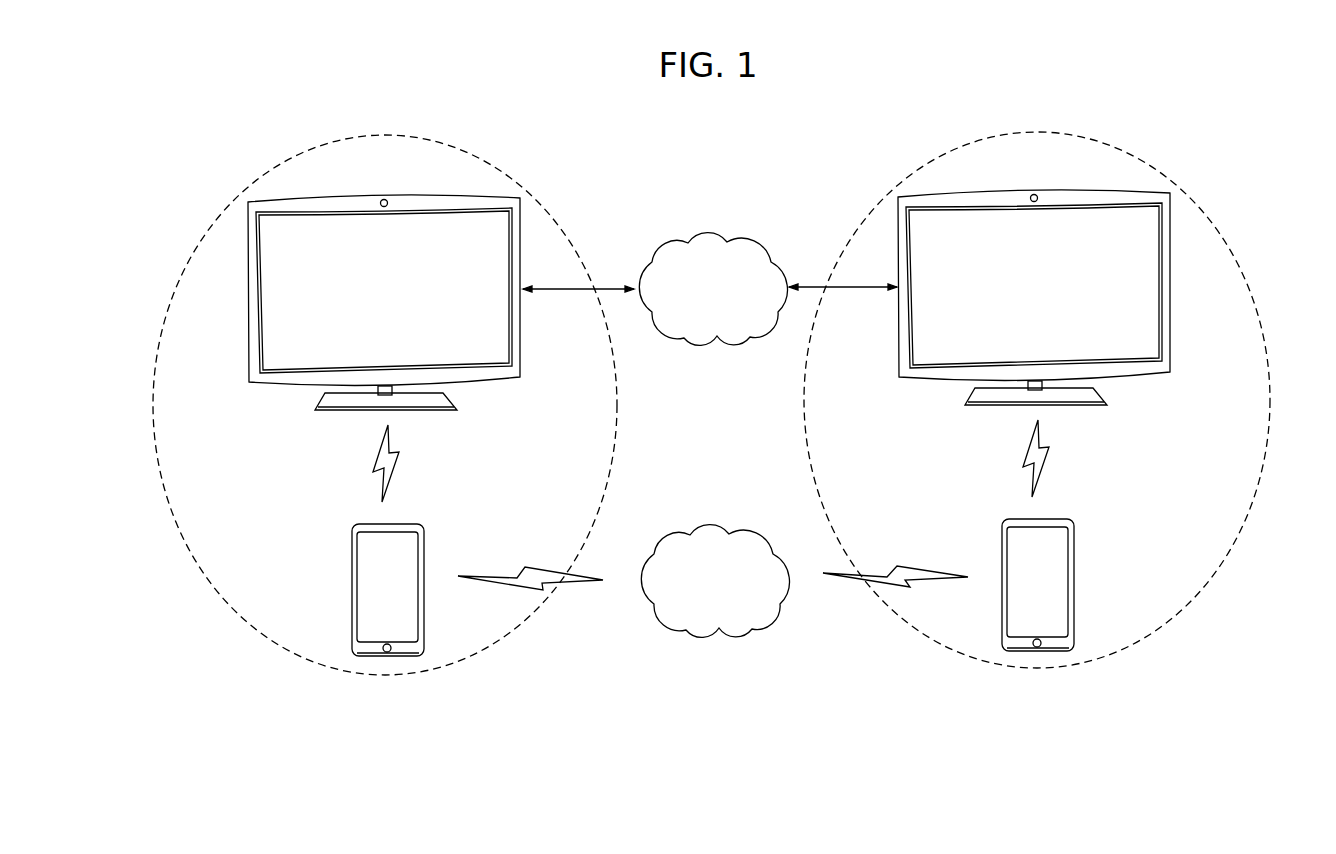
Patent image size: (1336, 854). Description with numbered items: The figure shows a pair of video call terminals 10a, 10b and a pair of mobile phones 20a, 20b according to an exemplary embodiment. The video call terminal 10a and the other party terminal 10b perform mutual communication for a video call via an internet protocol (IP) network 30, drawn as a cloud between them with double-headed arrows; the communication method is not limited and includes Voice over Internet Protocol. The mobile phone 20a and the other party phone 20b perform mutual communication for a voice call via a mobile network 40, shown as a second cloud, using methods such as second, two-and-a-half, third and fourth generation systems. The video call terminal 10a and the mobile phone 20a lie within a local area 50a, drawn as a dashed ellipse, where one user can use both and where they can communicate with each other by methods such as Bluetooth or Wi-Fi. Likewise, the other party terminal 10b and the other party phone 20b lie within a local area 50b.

The video call terminal 10a is at (384, 199).
The other party terminal 10b is at (1035, 194).
The mobile phone 20a is at (387, 653).
The other party phone 20b is at (1038, 648).
The internet protocol (IP) network 30 is at (709, 232).
The mobile network 40 is at (711, 525).
The local area 50a is at (487, 654).
The local area 50b is at (942, 647).